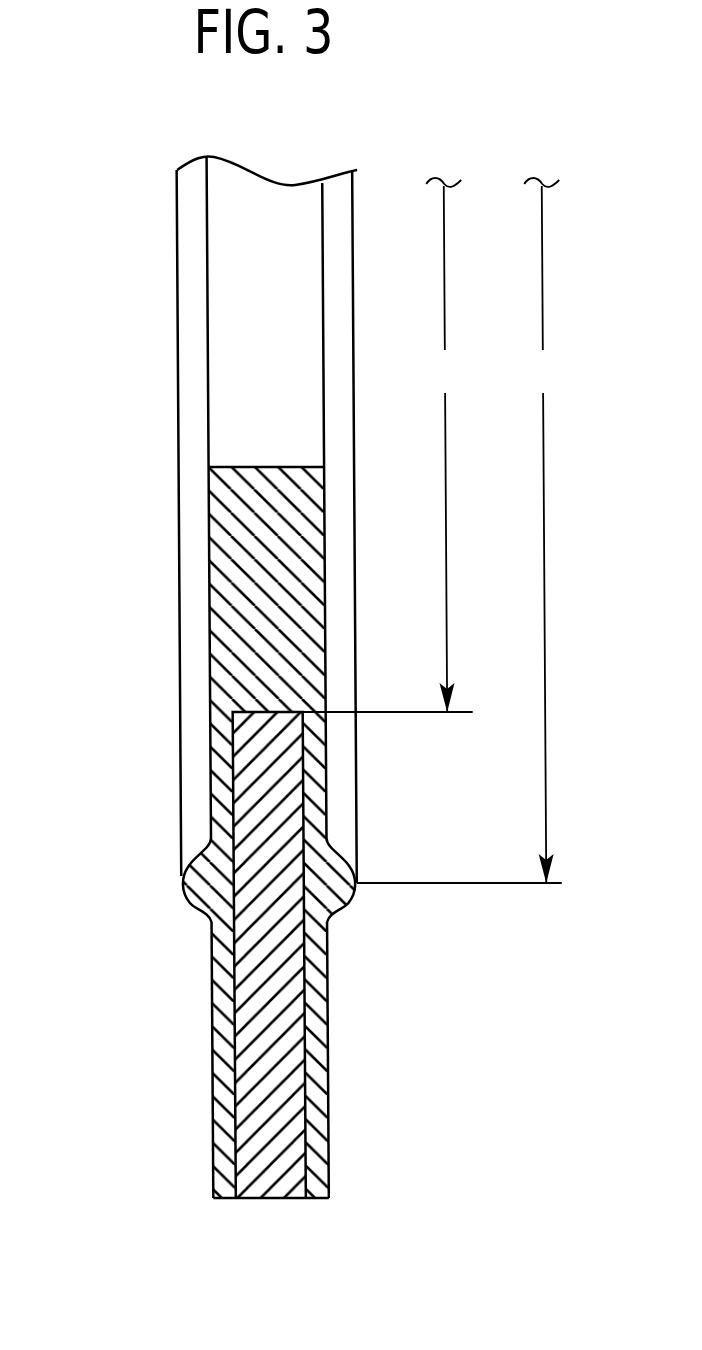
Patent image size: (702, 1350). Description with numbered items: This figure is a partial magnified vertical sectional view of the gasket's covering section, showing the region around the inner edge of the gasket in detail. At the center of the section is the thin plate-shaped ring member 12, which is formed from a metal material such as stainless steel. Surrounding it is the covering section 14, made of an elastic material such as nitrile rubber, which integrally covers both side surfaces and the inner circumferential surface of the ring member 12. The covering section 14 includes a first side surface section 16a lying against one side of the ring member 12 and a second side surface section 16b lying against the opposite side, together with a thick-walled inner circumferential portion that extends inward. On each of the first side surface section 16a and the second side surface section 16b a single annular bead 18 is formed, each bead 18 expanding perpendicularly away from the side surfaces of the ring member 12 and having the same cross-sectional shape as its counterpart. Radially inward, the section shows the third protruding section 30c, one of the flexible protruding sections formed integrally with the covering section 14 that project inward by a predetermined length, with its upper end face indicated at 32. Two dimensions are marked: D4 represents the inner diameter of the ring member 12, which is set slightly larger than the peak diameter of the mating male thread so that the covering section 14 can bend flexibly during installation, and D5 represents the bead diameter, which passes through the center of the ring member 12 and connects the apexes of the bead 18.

The ring member 12 is at (267, 1198).
The covering section 14 is at (327, 1072).
The first side surface section 16a is at (209, 1038).
The second side surface section 16b is at (315, 1137).
The bead 18 is at (177, 878).
The third protruding section 30c is at (256, 638).
The upper end face of filling member 32 is at (262, 467).
The inner diameter of the ring member D4 is at (350, 445).
The bead diameter D5 is at (458, 530).